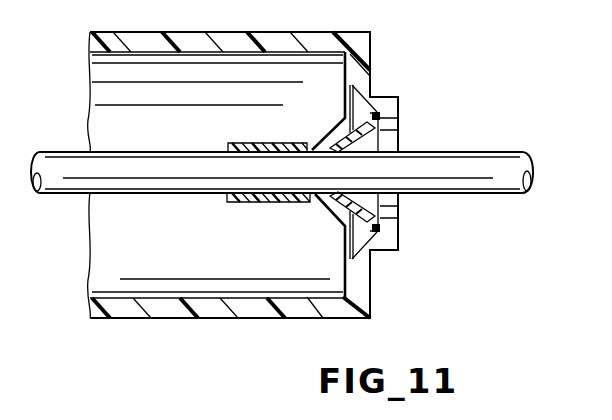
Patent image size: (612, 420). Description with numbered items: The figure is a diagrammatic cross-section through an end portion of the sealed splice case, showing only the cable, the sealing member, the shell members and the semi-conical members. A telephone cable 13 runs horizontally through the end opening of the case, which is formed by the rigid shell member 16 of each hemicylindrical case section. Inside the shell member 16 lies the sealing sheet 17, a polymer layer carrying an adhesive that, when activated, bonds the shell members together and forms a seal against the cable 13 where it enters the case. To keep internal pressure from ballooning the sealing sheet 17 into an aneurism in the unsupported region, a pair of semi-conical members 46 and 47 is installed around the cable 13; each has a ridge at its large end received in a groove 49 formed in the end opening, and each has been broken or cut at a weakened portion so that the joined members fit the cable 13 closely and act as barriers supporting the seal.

The telephone cable 13 is at (497, 151).
The rigid shell member 16 is at (362, 52).
The sealing sheet 17 is at (290, 143).
The semi-conical member 46 is at (396, 136).
The semi-conical member 47 is at (398, 210).
The groove 49 is at (380, 112).